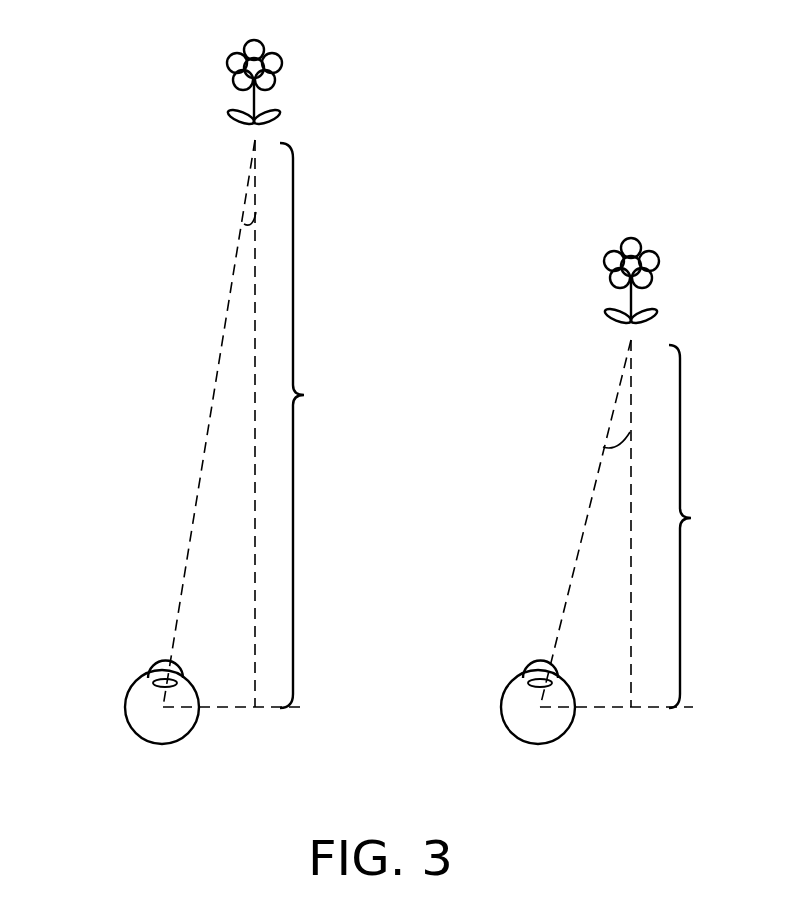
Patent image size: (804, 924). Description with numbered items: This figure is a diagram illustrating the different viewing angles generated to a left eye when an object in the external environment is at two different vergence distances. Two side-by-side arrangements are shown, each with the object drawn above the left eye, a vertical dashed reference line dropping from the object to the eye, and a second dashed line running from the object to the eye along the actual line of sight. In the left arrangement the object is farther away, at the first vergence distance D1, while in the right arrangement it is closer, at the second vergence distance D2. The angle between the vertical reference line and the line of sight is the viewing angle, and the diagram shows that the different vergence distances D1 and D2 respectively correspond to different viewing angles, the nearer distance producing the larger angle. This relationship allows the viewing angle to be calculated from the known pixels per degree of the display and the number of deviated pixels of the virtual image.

The vergence distance D1 is at (309, 425).
The vergence distance D2 is at (700, 526).